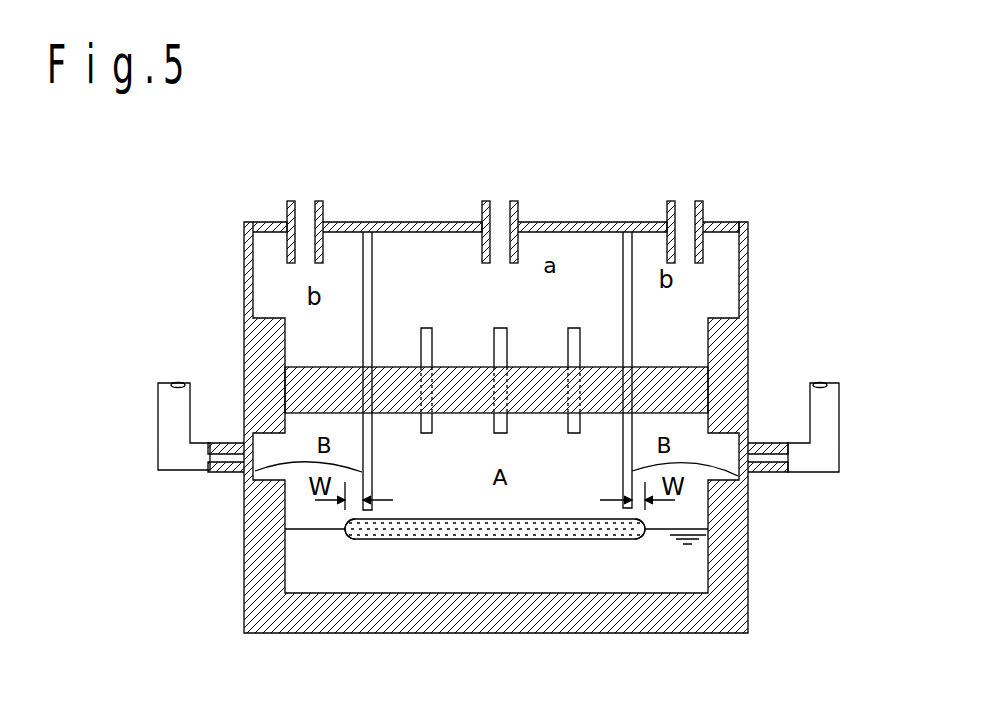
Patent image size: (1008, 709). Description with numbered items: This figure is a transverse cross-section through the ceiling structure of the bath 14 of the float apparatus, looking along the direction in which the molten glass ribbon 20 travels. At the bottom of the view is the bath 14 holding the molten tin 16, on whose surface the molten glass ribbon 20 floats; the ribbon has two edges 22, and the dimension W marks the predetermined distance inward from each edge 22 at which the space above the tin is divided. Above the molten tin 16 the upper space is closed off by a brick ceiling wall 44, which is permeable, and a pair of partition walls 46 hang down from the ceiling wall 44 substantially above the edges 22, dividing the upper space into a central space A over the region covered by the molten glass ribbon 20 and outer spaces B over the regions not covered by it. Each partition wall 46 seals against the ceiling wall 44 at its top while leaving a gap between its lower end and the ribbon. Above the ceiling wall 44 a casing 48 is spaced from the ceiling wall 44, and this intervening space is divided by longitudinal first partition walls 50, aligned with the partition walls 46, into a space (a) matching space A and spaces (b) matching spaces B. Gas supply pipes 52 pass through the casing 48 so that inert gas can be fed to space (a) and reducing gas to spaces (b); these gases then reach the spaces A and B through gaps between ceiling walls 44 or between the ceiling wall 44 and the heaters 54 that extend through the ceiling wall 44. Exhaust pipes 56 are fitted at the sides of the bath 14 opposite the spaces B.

The bath 14 is at (236, 569).
The molten tin 16 is at (692, 570).
The molten glass ribbon 20 is at (505, 540).
The edge 22 is at (357, 538).
The ceiling wall 44 is at (660, 367).
The partition wall 46 is at (244, 470).
The casing 48 is at (607, 222).
The first partition wall 50 is at (363, 257).
The gas supply pipe 52 is at (304, 210).
The heater 54 is at (426, 328).
The exhaust pipe 56 is at (165, 415).